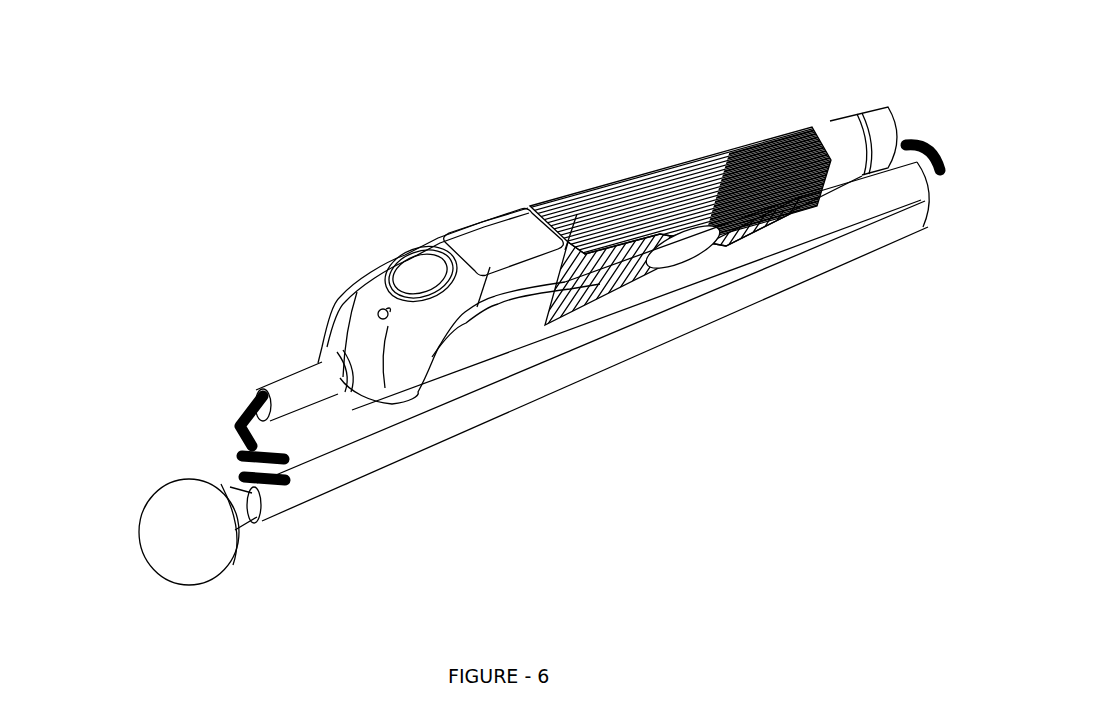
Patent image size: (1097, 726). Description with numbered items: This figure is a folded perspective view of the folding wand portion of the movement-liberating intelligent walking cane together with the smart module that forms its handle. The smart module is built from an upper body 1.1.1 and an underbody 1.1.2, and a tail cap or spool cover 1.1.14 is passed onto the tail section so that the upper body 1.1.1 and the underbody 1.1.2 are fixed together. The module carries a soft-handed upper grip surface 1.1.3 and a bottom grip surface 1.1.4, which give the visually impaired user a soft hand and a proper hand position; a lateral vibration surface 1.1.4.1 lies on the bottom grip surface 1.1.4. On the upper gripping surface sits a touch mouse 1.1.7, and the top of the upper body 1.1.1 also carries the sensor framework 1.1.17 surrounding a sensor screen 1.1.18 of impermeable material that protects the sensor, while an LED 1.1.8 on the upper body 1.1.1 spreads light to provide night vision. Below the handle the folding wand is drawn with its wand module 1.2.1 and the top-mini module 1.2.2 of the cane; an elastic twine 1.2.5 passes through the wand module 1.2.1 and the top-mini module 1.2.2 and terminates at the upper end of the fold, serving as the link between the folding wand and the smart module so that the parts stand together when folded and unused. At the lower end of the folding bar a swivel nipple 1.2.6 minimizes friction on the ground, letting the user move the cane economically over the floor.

The upper body 1.1.1 is at (332, 322).
The underbody 1.1.2 is at (492, 340).
The upper grip surface 1.1.3 is at (707, 163).
The bottom grip surface 1.1.4 is at (605, 300).
The lateral vibration surface 1.1.4.1 is at (688, 243).
The touch mouse 1.1.7 is at (510, 225).
The LED 1.1.8 is at (382, 313).
The spool cover 1.1.14 is at (870, 118).
The sensor framework 1.1.17 is at (440, 245).
The sensor screen 1.1.18 is at (403, 273).
The module of cane 1.2.1 is at (397, 435).
The top-mini module of cane 1.2.2 is at (295, 370).
The elastic twine 1.2.5 is at (247, 412).
The swivel nipple 1.2.6 is at (172, 580).